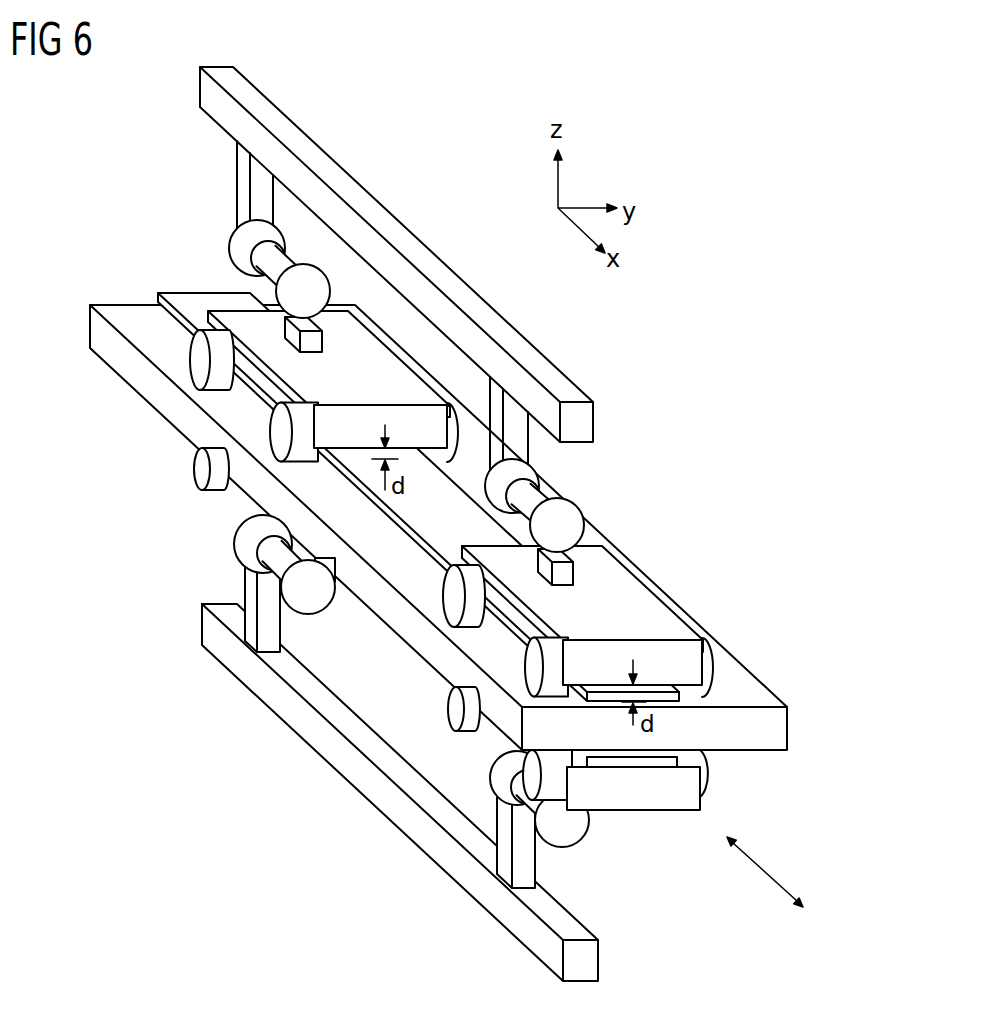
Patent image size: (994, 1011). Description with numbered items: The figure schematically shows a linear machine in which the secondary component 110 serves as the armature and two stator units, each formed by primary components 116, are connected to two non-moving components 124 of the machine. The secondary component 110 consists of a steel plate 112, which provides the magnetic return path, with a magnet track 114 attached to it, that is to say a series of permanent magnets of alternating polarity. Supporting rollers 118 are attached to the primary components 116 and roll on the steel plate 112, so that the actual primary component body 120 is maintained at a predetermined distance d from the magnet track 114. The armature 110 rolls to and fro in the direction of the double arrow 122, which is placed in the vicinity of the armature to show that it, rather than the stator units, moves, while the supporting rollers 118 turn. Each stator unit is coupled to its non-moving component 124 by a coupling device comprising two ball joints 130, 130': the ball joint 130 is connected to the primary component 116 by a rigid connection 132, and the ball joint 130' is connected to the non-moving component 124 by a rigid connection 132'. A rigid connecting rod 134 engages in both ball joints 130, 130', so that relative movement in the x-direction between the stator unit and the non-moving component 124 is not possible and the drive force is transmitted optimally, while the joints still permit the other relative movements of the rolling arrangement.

The secondary component 110 is at (118, 645).
The steel plate 112 is at (782, 727).
The magnet track 114 is at (435, 523).
The primary component 116 is at (260, 382).
The supporting roller 118 is at (197, 360).
The primary component body 120 is at (433, 426).
The arrow 122 is at (770, 883).
The non-moving component 124 is at (200, 100).
The ball joint 130 is at (408, 503).
The ball joint 130' is at (344, 512).
The rigid connection 132 is at (429, 403).
The rigid connection 132' is at (340, 514).
The connecting rod 134 is at (265, 271).